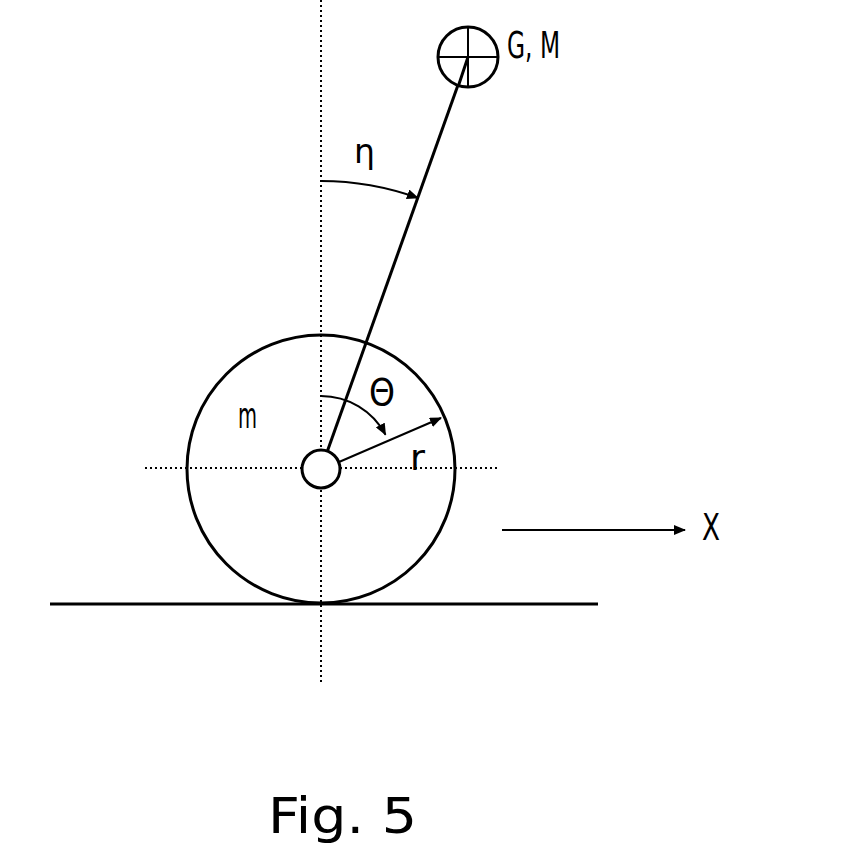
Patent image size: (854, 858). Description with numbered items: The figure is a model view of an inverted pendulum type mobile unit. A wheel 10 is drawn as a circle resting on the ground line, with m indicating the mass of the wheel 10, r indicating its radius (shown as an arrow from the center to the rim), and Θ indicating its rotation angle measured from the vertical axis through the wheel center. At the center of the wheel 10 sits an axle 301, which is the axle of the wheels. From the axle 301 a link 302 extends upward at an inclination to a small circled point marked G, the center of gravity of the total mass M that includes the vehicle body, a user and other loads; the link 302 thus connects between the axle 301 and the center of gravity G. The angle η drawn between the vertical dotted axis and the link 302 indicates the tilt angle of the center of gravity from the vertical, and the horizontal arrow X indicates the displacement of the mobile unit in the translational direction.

The wheel 10 is at (425, 381).
The axle 301 is at (331, 486).
The link 302 is at (402, 247).